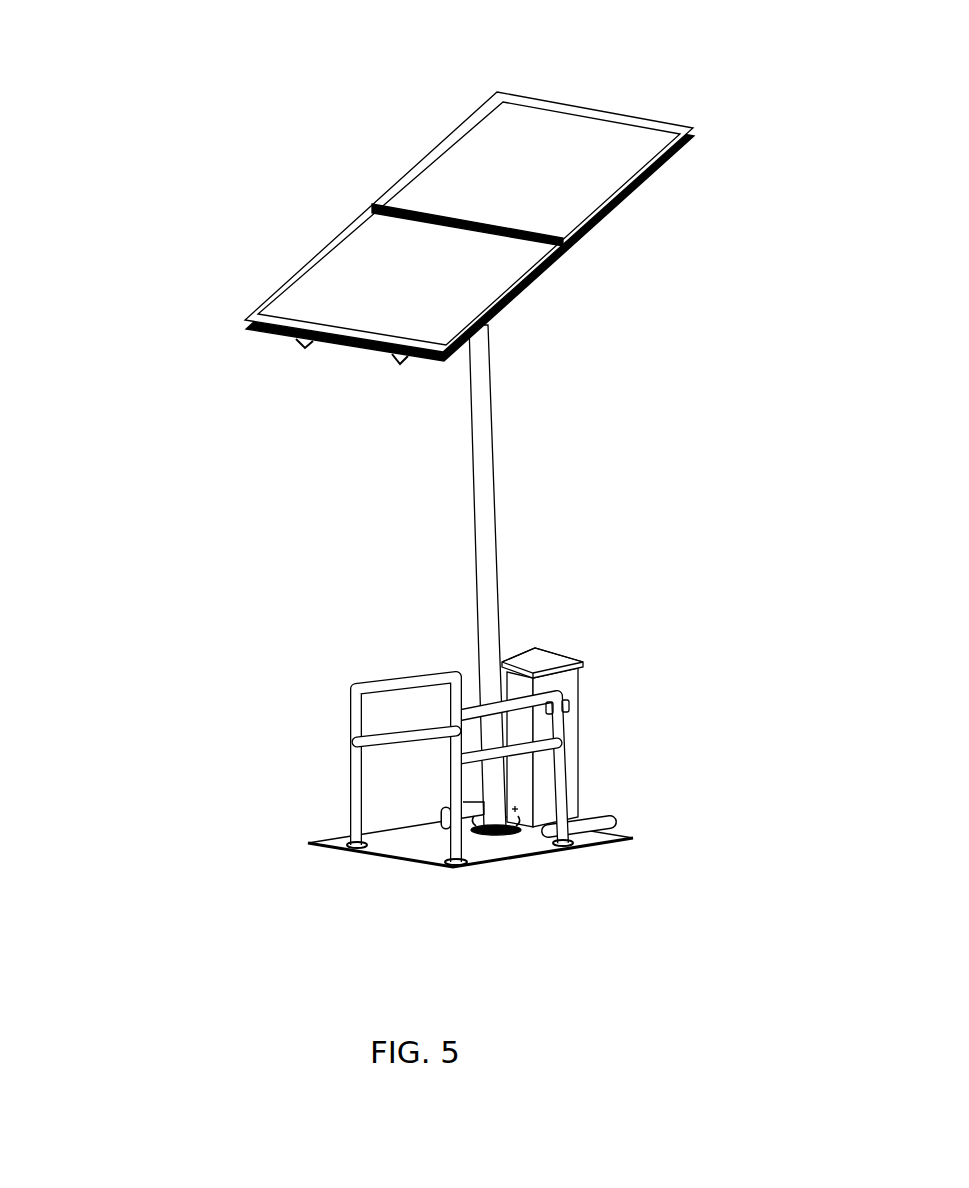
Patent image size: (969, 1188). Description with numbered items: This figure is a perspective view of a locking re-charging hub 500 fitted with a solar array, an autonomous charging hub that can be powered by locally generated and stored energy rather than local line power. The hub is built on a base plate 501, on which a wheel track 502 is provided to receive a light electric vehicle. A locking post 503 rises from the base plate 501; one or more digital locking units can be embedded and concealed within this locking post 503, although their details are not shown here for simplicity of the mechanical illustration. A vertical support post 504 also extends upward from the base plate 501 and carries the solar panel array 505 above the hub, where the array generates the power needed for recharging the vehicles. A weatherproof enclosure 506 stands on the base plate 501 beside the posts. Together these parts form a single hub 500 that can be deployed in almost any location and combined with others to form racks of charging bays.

The solar charging station system 500 is at (218, 76).
The base plate 501 is at (432, 840).
The wheel track 502 is at (590, 832).
The locking post 503 is at (388, 738).
The vertical support post 504 is at (488, 630).
The solar panel array 505 is at (407, 293).
The weatherproof enclosure 506 is at (541, 660).